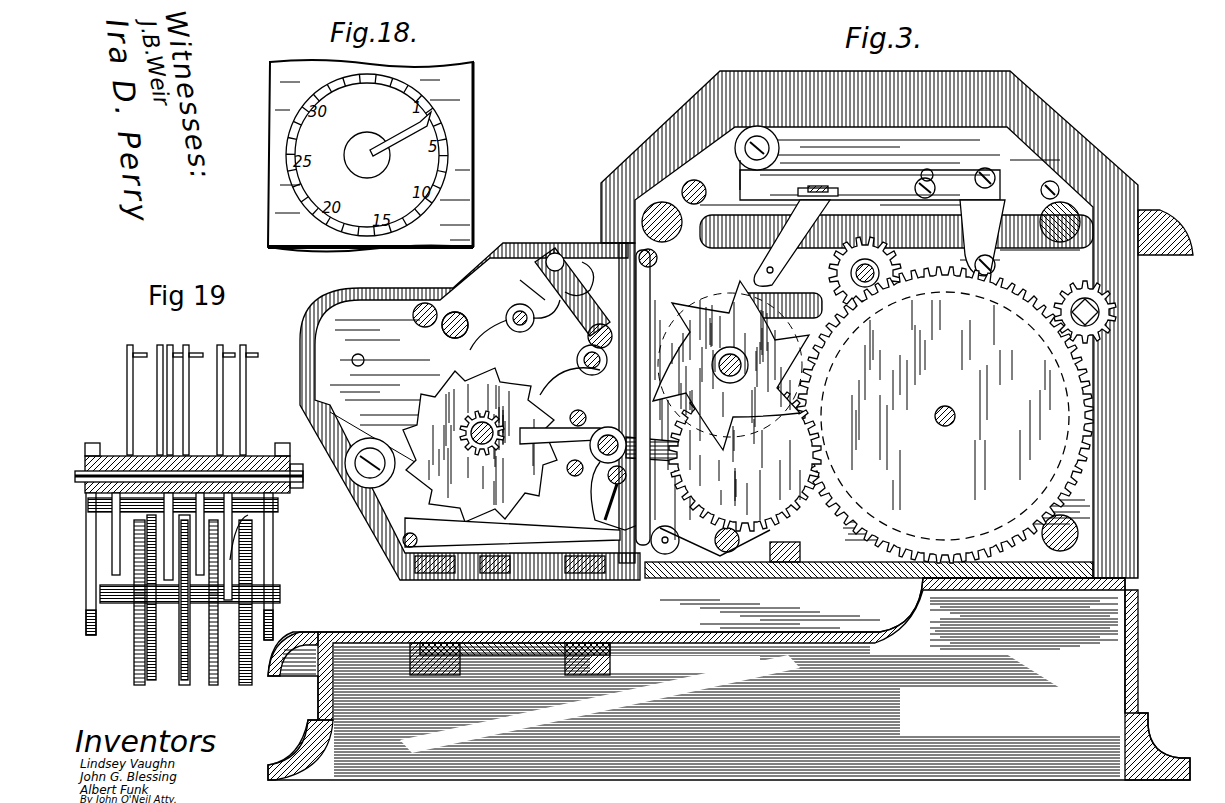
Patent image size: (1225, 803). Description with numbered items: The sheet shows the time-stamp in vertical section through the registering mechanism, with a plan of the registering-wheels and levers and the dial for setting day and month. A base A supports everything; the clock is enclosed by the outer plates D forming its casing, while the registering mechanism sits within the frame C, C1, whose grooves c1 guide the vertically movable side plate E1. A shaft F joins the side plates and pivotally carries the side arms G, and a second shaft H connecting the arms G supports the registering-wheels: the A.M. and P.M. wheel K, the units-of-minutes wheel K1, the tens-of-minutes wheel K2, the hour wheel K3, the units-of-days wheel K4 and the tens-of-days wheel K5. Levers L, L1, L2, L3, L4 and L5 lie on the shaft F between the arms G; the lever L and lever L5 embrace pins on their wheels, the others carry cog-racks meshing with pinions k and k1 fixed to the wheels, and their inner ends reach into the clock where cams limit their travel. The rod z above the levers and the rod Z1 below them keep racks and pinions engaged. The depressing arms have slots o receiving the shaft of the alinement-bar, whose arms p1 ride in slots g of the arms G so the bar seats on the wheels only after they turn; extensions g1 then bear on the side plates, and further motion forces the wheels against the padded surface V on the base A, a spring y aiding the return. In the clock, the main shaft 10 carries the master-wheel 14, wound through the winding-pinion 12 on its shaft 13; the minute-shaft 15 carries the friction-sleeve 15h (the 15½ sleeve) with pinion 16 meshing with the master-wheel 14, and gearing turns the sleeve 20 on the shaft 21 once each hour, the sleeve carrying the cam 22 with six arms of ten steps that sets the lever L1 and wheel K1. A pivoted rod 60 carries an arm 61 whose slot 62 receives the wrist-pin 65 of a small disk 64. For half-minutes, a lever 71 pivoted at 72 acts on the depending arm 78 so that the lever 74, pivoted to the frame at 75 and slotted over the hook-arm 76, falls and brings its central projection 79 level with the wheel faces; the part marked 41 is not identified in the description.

In FIG. 3, the base A is at (729, 679).
In FIG. 3, the outer plates D is at (1080, 152).
In FIG. 3, the frame C is at (322, 302).
In FIG. 3, the vertically-movable side plate E1 is at (385, 385).
In FIG. 3, the padded surface V is at (472, 634).
In FIG. 3, the main shaft 10 is at (947, 410).
In FIG. 3, the winding-pinion 12 is at (1108, 308).
In FIG. 3, the winding shaft 13 is at (1100, 322).
In FIG. 3, the master-wheel 14 is at (945, 415).
In FIG. 3, the minute-shaft 15 is at (872, 282).
In FIG. 3, the pinion 16 is at (901, 257).
In FIG. 3, the hollow shaft or sleeve 20 is at (722, 360).
In FIG. 3, the cam shaft 21 is at (745, 365).
In FIG. 3, the cam 22 is at (745, 452).
In FIG. 3, the pin 41 is at (616, 493).
In FIG. 3, the pivotally-mounted rod or shaft 60 is at (692, 185).
In FIG. 3, the arm 61 is at (812, 188).
In FIG. 3, the slot 62 is at (812, 200).
In FIG. 3, the small disk 64 is at (828, 186).
In FIG. 3, the wrist-pin 65 is at (919, 181).
In FIG. 3, the lever 71 is at (640, 300).
In FIG. 3, the pivot 72 is at (660, 258).
In FIG. 3, the lever 74 is at (445, 565).
In FIG. 3, the pivot 75 is at (415, 538).
In FIG. 3, the hook-arm 76 is at (612, 492).
In FIG. 3, the depending arm 78 is at (645, 565).
In FIG. 3, the central projection 79 is at (510, 566).
In FIG. 3, the slot g is at (510, 333).
In FIG. 3, the extension g1 is at (450, 332).
In FIG. 19, the pinion k is at (228, 602).
In FIG. 3, the pinion k is at (411, 438).
In FIG. 3, the pinion k1 is at (483, 420).
In FIG. 19, the registering-wheel K1 is at (246, 686).
In FIG. 3, the registering-wheel K1 is at (480, 445).
In FIG. 3, the slot o is at (570, 384).
In FIG. 3, the transverse rod z is at (578, 410).
In FIG. 3, the frame plate C1 is at (553, 255).
In FIG. 3, the spring y is at (582, 262).
In FIG. 3, the extending arm p1 is at (520, 280).
In FIG. 3, the friction-sleeve or hollow shaft 15h is at (868, 347).
In FIG. 19, the shaft F is at (298, 480).
In FIG. 19, the side arms G is at (316, 542).
In FIG. 19, the second shaft H is at (250, 615).
In FIG. 19, the registering-wheel K is at (258, 650).
In FIG. 19, the registering-wheel K2 is at (214, 688).
In FIG. 19, the registering-wheel K3 is at (185, 685).
In FIG. 19, the registering-wheel K4 is at (152, 680).
In FIG. 19, the registering-wheel K5 is at (140, 685).
In FIG. 19, the lever L is at (220, 345).
In FIG. 19, the lever L1 is at (246, 345).
In FIG. 19, the lever L2 is at (222, 345).
In FIG. 19, the lever L3 is at (186, 345).
In FIG. 19, the lever L4 is at (160, 345).
In FIG. 19, the lever L5 is at (130, 345).
In FIG. 19, the rod Z1 is at (116, 500).
In FIG. 19, the groove c1 is at (122, 625).